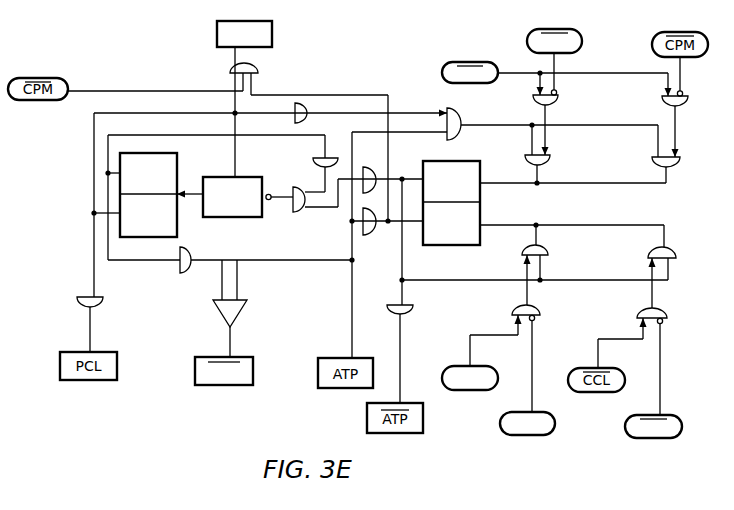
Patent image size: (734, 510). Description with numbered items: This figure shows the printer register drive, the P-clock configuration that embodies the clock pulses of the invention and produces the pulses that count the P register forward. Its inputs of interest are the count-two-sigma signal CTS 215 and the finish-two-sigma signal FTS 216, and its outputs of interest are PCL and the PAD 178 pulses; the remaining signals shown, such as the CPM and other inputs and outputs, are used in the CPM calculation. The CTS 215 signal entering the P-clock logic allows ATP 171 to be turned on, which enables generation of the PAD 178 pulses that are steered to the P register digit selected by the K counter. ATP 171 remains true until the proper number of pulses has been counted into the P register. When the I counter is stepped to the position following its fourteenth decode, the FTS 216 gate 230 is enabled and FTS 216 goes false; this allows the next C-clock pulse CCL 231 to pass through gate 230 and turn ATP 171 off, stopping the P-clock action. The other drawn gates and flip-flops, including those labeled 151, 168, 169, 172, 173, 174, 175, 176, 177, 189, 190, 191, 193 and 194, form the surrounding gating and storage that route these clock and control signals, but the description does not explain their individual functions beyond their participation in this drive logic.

The JRZ signal input 151 is at (465, 390).
The AND gate 168 is at (540, 312).
The GTF signal input 169 is at (553, 432).
The ATP 171 is at (457, 245).
The AND gate 172 is at (548, 251).
The OR gate 173 is at (297, 212).
The U.J. flip-flop 174 is at (262, 177).
The inverter 175 is at (241, 312).
The PCL flip-flop 176 is at (177, 232).
The feedback line 177 is at (186, 135).
The PAD 178 is at (221, 385).
The OR gate 189 is at (461, 118).
The AND gate 190 is at (679, 164).
The AND gate 191 is at (686, 107).
The OR gate 193 is at (258, 68).
The WFP signal input 194 is at (272, 36).
The CTS 215 is at (682, 425).
The FTS 216 is at (572, 29).
The gate 230 is at (558, 102).
The CCL 231 is at (472, 54).